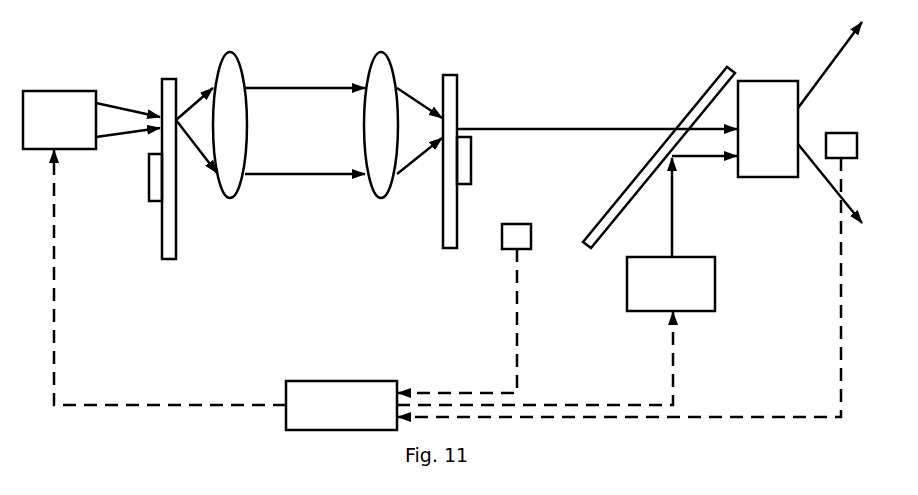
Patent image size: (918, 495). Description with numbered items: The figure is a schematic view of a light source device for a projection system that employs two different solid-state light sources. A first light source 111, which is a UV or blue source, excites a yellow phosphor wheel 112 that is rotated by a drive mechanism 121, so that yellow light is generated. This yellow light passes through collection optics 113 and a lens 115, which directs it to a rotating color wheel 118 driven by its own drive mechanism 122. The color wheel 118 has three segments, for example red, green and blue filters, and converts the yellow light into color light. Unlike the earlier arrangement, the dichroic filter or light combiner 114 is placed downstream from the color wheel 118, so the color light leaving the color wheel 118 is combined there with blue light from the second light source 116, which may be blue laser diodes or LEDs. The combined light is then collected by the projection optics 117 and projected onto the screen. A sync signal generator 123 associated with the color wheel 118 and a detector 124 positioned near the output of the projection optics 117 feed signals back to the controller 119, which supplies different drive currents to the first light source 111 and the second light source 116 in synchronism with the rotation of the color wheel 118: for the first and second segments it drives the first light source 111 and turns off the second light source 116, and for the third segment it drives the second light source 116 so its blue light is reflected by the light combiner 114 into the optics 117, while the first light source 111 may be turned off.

The first light source 111 is at (38, 90).
The yellow phosphor wheel 112 is at (167, 83).
The collection optics 113 is at (231, 67).
The dichroic filter 114 is at (708, 88).
The lens 115 is at (386, 63).
The second light source 116 is at (681, 257).
The projection optics 117 is at (758, 90).
The color wheel 118 is at (450, 88).
The controller 119 is at (310, 395).
The drive mechanism 121 is at (155, 193).
The drive mechanism 122 is at (463, 183).
The sync signal generator 123 is at (517, 230).
The sensor 124 is at (842, 152).